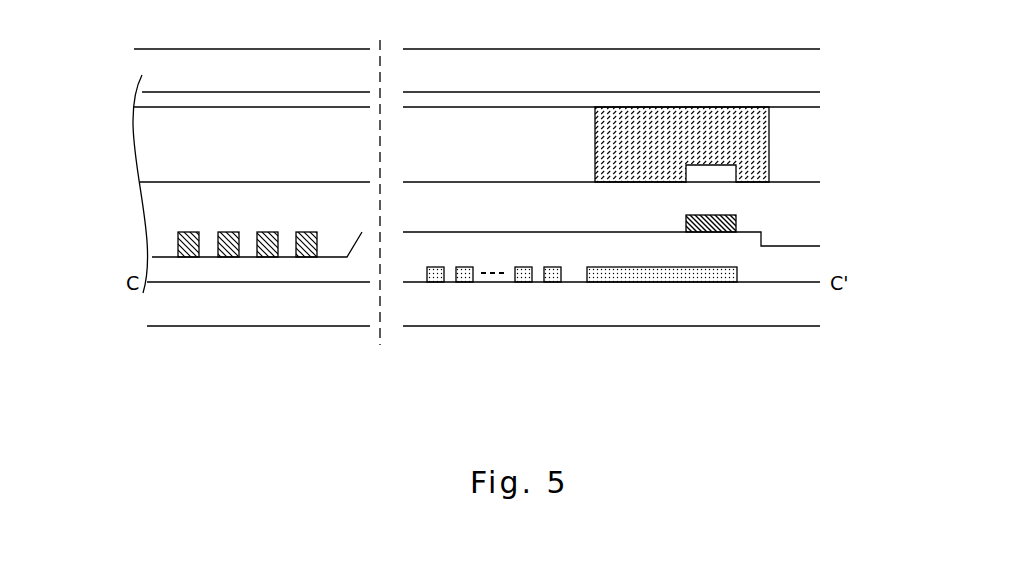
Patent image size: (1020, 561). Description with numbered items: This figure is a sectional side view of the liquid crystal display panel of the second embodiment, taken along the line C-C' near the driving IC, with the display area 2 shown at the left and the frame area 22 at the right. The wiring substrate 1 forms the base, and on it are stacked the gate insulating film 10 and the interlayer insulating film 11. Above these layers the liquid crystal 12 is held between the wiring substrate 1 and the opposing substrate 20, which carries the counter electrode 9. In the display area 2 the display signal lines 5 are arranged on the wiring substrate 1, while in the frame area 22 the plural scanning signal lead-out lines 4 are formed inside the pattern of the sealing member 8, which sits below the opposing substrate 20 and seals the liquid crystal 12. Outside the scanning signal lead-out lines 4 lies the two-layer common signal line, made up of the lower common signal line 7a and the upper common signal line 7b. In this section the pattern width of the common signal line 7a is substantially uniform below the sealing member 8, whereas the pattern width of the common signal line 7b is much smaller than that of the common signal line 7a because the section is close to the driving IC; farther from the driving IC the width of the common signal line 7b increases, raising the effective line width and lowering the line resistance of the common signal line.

The wiring substrate 1 is at (211, 317).
The display area 2 is at (237, 370).
The scanning signal lead-out line 4 is at (563, 284).
The display signal line 5 is at (328, 232).
The common signal line 7a is at (655, 268).
The common signal line 7b is at (737, 223).
The sealing member 8 is at (618, 115).
The counter electrode 9 is at (288, 98).
The gate insulating film 10 is at (163, 270).
The interlayer insulating film 11 is at (160, 207).
The liquid crystal 12 is at (163, 148).
The opposing substrate 20 is at (298, 55).
The frame area 22 is at (591, 370).